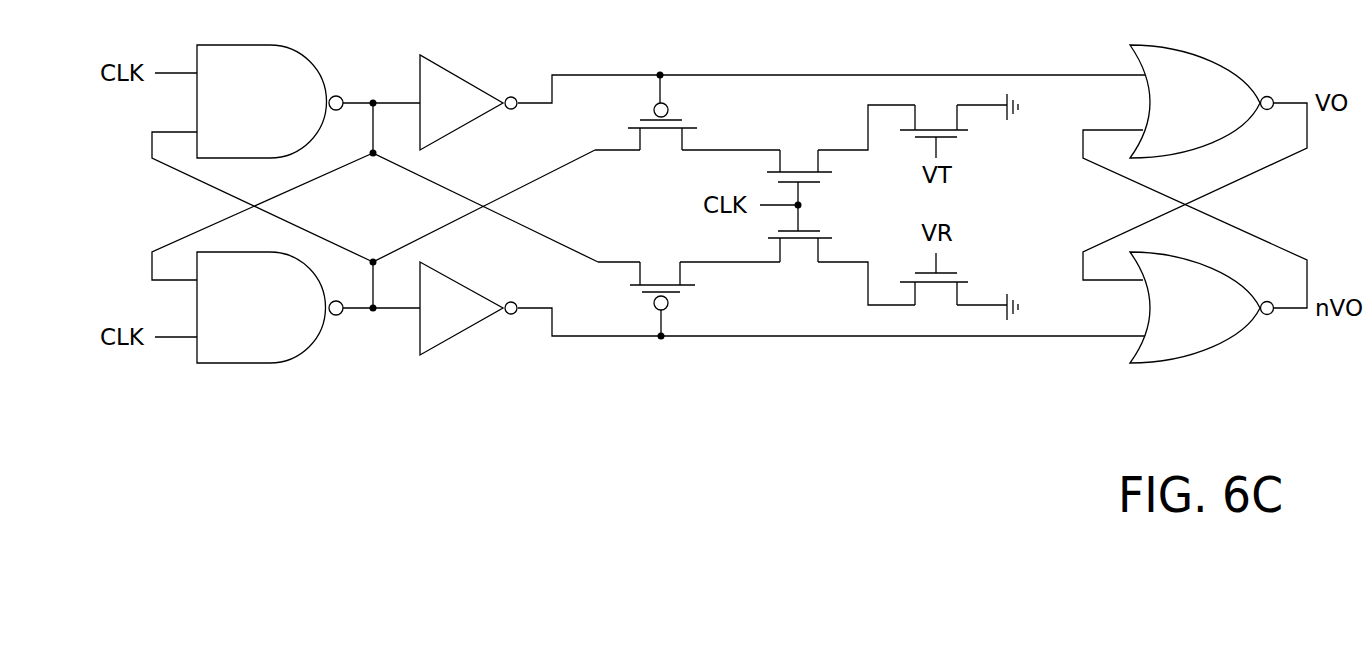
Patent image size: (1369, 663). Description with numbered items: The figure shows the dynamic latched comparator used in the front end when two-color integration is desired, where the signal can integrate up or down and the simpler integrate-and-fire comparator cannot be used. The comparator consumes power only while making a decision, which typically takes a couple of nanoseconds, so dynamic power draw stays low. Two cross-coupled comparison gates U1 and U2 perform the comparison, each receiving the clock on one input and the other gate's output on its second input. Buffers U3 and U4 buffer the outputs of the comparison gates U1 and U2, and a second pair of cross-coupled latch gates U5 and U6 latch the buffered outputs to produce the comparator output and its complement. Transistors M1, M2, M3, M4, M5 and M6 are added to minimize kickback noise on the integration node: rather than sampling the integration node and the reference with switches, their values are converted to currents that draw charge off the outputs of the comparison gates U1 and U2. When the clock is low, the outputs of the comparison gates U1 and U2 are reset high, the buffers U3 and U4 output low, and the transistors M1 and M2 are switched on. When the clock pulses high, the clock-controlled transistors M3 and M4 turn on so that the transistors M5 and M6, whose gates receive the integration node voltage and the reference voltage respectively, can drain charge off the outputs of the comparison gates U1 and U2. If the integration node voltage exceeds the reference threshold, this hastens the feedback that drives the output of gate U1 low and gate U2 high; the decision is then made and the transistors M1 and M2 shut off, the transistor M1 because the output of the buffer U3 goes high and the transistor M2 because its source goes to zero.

The comparison gate U1 is at (270, 101).
The comparison gate U2 is at (270, 307).
The buffer U3 is at (468, 102).
The buffer U4 is at (468, 308).
The latch gate U5 is at (1202, 101).
The latch gate U6 is at (1202, 307).
The transistor M1 is at (662, 127).
The transistor M2 is at (662, 283).
The transistor M3 is at (799, 162).
The transistor M4 is at (800, 248).
The transistor M5 is at (934, 116).
The transistor M6 is at (934, 291).